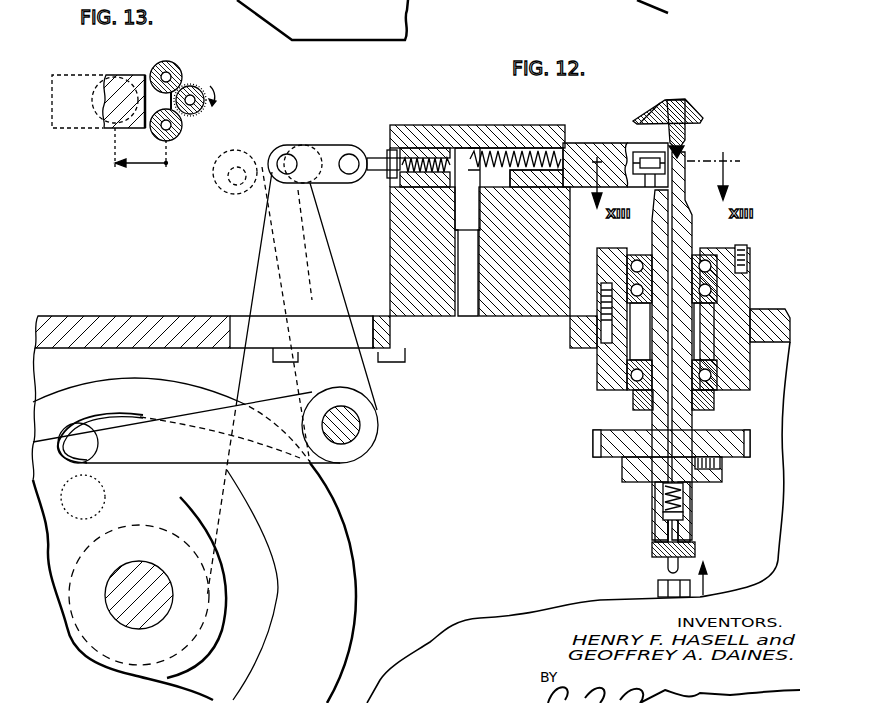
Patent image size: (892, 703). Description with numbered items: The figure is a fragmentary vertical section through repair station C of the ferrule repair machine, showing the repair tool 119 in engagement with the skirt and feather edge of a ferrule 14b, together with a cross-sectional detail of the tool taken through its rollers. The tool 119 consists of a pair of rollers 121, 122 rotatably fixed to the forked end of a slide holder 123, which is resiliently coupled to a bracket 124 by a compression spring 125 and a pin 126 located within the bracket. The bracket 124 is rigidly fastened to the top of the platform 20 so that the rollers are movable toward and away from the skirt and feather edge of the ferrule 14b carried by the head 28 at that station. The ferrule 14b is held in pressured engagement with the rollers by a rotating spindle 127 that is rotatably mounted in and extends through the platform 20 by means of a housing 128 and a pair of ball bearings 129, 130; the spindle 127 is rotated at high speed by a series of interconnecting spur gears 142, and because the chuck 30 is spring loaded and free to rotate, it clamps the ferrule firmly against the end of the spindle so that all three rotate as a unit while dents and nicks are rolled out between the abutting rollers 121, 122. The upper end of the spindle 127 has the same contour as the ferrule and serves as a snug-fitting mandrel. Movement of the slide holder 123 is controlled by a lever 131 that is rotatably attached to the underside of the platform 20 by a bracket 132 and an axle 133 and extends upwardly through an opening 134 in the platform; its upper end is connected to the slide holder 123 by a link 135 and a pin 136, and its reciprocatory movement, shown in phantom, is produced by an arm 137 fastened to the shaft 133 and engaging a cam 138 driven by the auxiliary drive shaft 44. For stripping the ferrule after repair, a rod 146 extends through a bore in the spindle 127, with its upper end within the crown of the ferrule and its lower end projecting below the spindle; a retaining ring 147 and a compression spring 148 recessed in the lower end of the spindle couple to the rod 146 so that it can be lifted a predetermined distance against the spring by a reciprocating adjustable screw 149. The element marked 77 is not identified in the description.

In FIG. 12, the platform 20 is at (80, 316).
In FIG. 12, the head 28 is at (693, 108).
In FIG. 12, the chuck 30 is at (684, 126).
In FIG. 13, the ferrule 14b is at (186, 92).
In FIG. 12, the ferrule 14b is at (683, 154).
In FIG. 12, the auxiliary drive shaft 44 is at (131, 622).
In FIG. 12, the cutter head edge 77 is at (662, 107).
In FIG. 12, the repair tool 119 is at (400, 225).
In FIG. 13, the roller 121 is at (160, 64).
In FIG. 13, the roller 122 is at (144, 128).
In FIG. 12, the roller 122 is at (642, 160).
In FIG. 13, the slide holder 123 is at (112, 92).
In FIG. 12, the slide holder 123 is at (580, 145).
In FIG. 12, the bracket 124 is at (405, 268).
In FIG. 12, the compression spring 125 is at (495, 150).
In FIG. 12, the pin 126 is at (460, 148).
In FIG. 13, the spindle 127 is at (191, 109).
In FIG. 12, the spindle 127 is at (688, 193).
In FIG. 12, the housing 128 is at (743, 292).
In FIG. 12, the ball bearing 129 is at (712, 248).
In FIG. 12, the ball bearing 130 is at (718, 367).
In FIG. 12, the lever 131 is at (290, 240).
In FIG. 12, the bracket 132 is at (388, 360).
In FIG. 12, the axle 133 is at (362, 428).
In FIG. 12, the opening 134 is at (238, 316).
In FIG. 12, the link 135 is at (316, 146).
In FIG. 12, the pin 136 is at (368, 148).
In FIG. 12, the arm 137 is at (276, 464).
In FIG. 12, the cam 138 is at (343, 580).
In FIG. 12, the spur gear 142 is at (607, 442).
In FIG. 12, the rod 146 is at (672, 420).
In FIG. 12, the retaining ring 147 is at (662, 516).
In FIG. 12, the compression spring 148 is at (658, 498).
In FIG. 12, the adjustable screw 149 is at (657, 586).